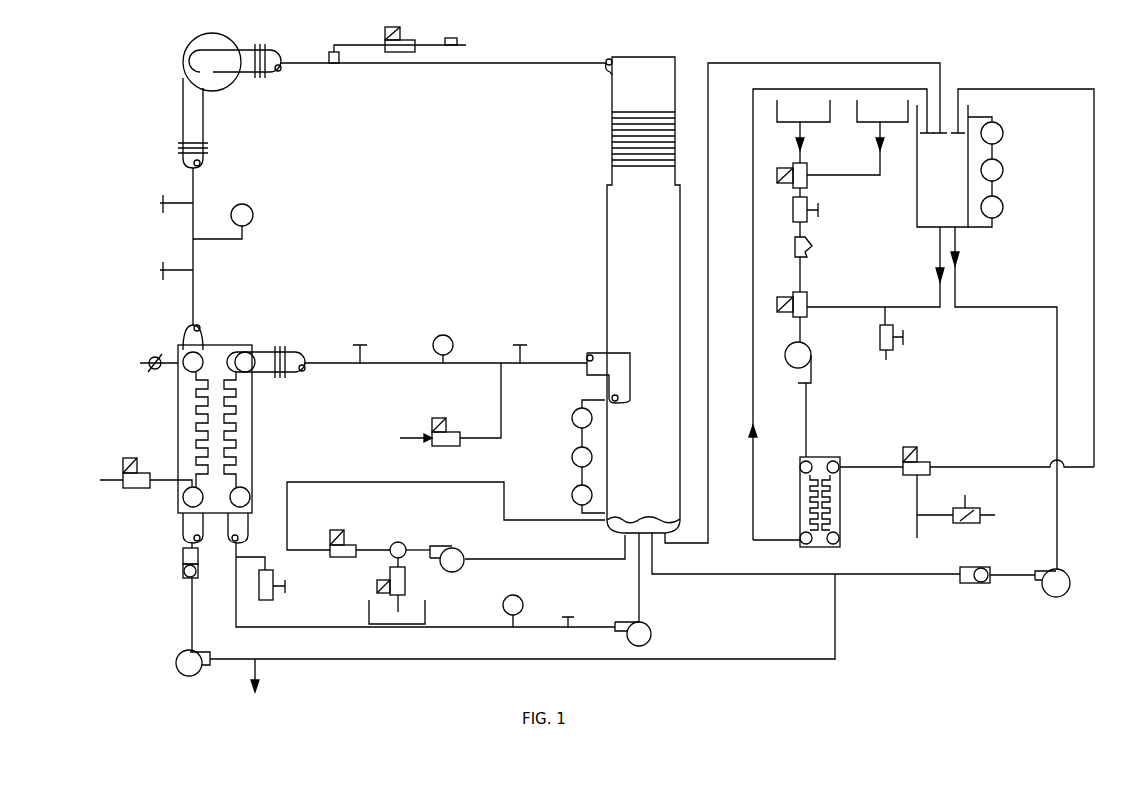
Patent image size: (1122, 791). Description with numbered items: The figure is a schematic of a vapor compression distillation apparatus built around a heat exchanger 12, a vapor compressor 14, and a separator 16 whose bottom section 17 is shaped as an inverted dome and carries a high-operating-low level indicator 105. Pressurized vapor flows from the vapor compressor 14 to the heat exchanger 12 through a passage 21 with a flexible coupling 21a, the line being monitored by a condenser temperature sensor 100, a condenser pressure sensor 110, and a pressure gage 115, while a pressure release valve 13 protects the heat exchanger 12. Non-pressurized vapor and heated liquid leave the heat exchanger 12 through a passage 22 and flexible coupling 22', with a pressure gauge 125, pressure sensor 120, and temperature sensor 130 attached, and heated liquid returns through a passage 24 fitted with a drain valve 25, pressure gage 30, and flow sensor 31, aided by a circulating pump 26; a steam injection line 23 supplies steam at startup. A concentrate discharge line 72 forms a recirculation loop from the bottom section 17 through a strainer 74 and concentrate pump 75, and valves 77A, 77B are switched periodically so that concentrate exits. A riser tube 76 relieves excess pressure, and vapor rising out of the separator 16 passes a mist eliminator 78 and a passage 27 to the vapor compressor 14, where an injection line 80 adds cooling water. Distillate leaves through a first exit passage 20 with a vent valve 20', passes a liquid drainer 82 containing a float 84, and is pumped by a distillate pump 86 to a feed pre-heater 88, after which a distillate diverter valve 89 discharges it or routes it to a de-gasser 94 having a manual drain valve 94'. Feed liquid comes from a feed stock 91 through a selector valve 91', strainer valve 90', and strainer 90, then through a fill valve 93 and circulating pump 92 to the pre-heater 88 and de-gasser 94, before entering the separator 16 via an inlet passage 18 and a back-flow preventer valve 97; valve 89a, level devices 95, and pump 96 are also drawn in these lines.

The heat exchanger 12 is at (252, 392).
The pressure release valve 13 is at (140, 362).
The vapor compressor 14 is at (230, 42).
The separator 16 is at (604, 256).
The bottom section 17 is at (682, 525).
The inlet passage 18 is at (750, 575).
The first exit passage 20 is at (184, 528).
The vent valve 20' is at (132, 472).
The passage 21 is at (200, 200).
The flexible coupling 21a is at (262, 80).
The passage 22 is at (467, 360).
The flexible coupling 22' is at (274, 332).
The steam injection line 23 is at (446, 448).
The passage 24 is at (641, 595).
The drain valve 25 is at (273, 596).
The circulating pump 26 is at (652, 634).
The passage 27 is at (552, 52).
The pressure gage 30 is at (520, 596).
The flow sensor 31 is at (570, 615).
The concentrate discharge line 72 is at (485, 556).
The strainer 74 is at (398, 541).
The concentrate pump 75 is at (448, 545).
The riser tube 76 is at (710, 382).
The valve 77A is at (330, 540).
The valve 77B is at (377, 586).
The mist eliminator 78 is at (686, 62).
The injection line 80 is at (352, 45).
The liquid drainer 82 is at (183, 556).
The float 84 is at (183, 574).
The distillate pump 86 is at (196, 650).
The feed pre-heater 88 is at (840, 520).
The distillate diverter valve 89 is at (930, 450).
The hand valve 89a is at (972, 508).
The strainer 90 is at (827, 247).
The strainer valve 90' is at (828, 209).
The feed stock 91 is at (842, 137).
The selector valve 91' is at (820, 181).
The circulating pump 92 is at (812, 368).
The fill valve 93 is at (808, 304).
The de-gasser 94 is at (932, 337).
The valve 94' is at (915, 333).
The level sensors 95 is at (1000, 150).
The pump 96 is at (1043, 575).
The back-flow preventer valve 97 is at (975, 585).
The condenser temperature sensor 100 is at (256, 213).
The high-operating-low level indicator 105 is at (572, 438).
The condenser pressure sensor 110 is at (160, 200).
The pressure gage 115 is at (160, 268).
The pressure sensor 120 is at (438, 335).
The pressure gauge 125 is at (522, 335).
The temperature sensor 130 is at (360, 340).